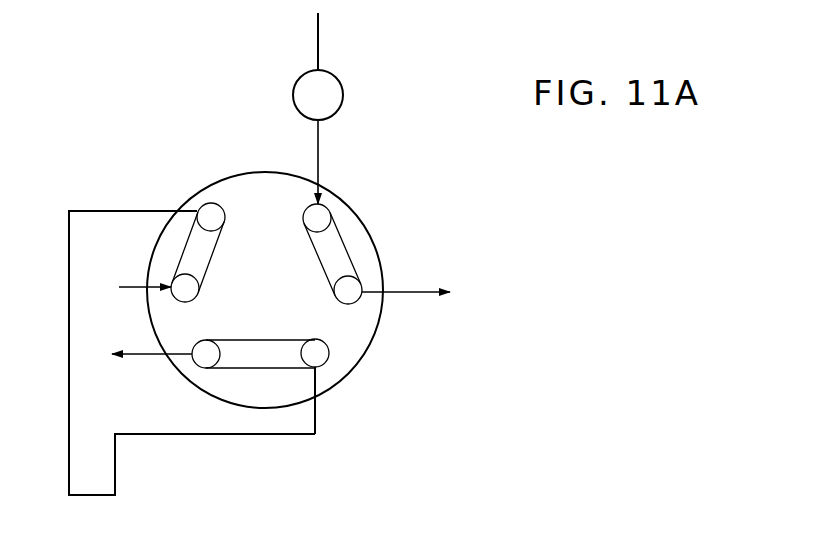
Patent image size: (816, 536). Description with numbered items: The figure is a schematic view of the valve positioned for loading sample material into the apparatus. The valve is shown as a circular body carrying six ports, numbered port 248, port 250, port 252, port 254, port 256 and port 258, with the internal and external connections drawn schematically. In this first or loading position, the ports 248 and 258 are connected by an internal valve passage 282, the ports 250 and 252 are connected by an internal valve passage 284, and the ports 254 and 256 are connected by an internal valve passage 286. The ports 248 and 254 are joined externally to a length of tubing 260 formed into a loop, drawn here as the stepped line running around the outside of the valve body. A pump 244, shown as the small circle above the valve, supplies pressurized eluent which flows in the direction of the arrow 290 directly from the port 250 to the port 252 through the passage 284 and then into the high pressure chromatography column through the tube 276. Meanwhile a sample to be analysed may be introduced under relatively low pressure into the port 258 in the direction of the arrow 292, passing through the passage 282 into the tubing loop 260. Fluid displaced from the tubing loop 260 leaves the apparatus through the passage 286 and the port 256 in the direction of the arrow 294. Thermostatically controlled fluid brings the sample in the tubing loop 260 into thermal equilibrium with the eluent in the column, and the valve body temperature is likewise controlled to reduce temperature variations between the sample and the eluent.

The pump 244 is at (343, 88).
The arrow 290 is at (320, 150).
The port 248 is at (208, 203).
The port 250 is at (333, 214).
The port 252 is at (360, 302).
The port 254 is at (322, 366).
The port 256 is at (204, 367).
The port 258 is at (176, 297).
The internal valve passage 282 is at (210, 256).
The internal valve passage 284 is at (346, 256).
The internal valve passage 286 is at (260, 337).
The arrow 292 is at (137, 285).
The tube 276 is at (408, 293).
The arrow 294 is at (150, 359).
The tubing loop 260 is at (117, 454).